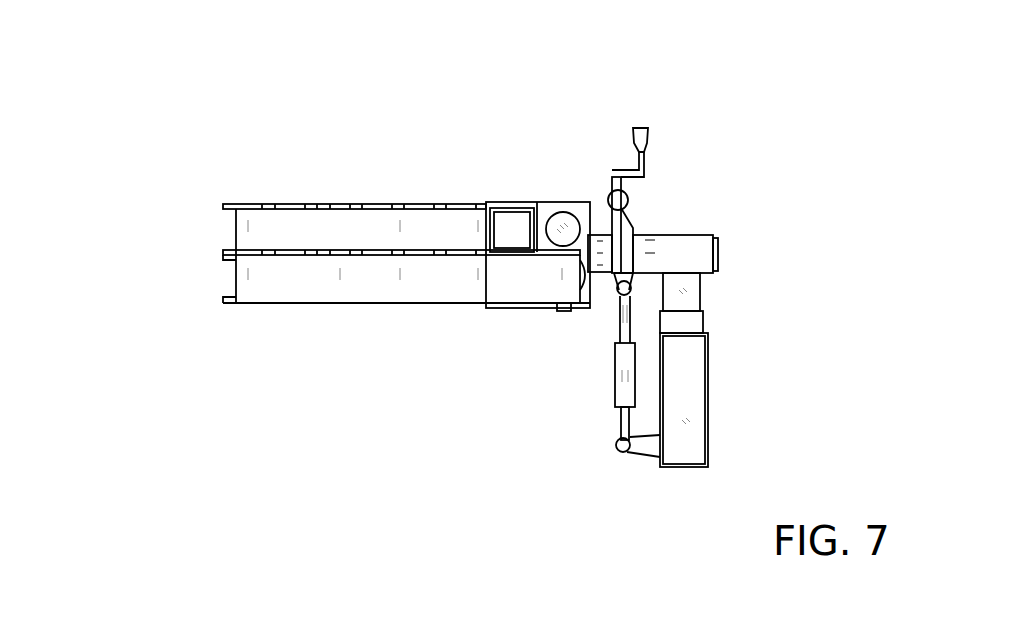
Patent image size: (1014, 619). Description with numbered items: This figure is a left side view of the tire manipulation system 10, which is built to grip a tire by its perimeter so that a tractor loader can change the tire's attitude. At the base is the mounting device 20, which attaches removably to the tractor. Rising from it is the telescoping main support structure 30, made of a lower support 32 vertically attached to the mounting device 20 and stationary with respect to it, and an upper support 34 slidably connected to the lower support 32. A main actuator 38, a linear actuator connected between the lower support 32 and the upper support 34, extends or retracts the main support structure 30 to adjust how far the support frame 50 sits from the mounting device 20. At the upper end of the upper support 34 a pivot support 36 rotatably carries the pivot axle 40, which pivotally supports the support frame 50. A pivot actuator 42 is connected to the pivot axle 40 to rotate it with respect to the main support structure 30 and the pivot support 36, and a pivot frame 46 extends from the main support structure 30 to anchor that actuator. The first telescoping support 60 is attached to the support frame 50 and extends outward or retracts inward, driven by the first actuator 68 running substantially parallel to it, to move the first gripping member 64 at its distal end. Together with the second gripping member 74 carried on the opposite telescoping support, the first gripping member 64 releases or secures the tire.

The tire manipulation system 10 is at (118, 80).
The mounting device 20 is at (708, 413).
The main support structure 30 is at (657, 413).
The lower support 32 is at (673, 368).
The upper support 34 is at (702, 297).
The pivot support 36 is at (692, 234).
The main actuator 38 is at (613, 377).
The pivot axle 40 is at (606, 198).
The pivot actuator 42 is at (628, 200).
The pivot frame 46 is at (638, 237).
The support frame 50 is at (503, 200).
The first telescoping support 60 is at (480, 208).
The first gripping member 64 is at (360, 205).
The first actuator 68 is at (558, 211).
The second gripping member 74 is at (375, 305).